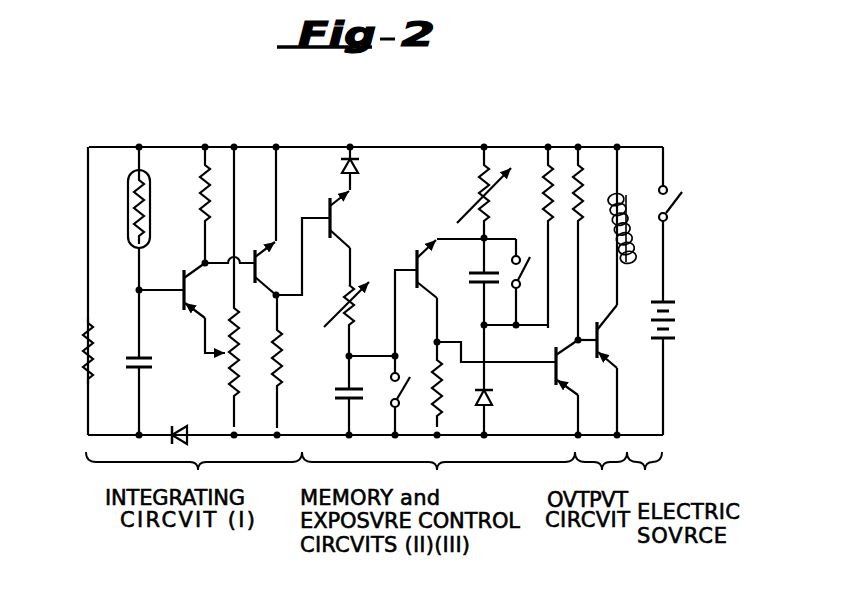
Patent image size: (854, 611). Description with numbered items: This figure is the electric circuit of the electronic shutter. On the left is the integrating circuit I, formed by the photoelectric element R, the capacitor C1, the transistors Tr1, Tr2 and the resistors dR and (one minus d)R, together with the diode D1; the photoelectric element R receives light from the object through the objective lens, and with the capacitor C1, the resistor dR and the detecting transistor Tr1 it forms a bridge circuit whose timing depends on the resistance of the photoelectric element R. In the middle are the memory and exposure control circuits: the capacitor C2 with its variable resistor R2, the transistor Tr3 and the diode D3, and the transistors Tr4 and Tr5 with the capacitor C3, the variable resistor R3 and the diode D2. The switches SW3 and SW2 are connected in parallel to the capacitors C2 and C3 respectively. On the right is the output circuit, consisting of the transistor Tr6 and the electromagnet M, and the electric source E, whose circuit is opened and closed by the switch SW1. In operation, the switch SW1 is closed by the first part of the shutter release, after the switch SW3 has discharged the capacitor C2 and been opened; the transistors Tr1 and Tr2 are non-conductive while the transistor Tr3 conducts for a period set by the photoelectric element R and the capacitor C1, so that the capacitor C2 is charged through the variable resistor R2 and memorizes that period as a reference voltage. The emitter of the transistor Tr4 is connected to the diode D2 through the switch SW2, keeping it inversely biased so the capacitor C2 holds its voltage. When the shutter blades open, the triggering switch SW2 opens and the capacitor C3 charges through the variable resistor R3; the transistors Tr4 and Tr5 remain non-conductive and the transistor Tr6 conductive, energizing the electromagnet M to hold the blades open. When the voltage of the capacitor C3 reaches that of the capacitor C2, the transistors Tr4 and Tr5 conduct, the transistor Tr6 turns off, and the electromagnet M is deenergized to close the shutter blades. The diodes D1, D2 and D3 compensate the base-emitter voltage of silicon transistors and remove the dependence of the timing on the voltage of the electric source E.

The integrating circuit I is at (122, 229).
The photoelectric element R is at (148, 218).
The capacitor C1 is at (151, 362).
The diode D1 is at (180, 422).
The detecting transistor Tr1 is at (182, 308).
The resistor dR is at (246, 360).
The transistor Tr2 is at (272, 221).
The diode D3 is at (363, 168).
The transistor Tr3 is at (347, 238).
The variable resistor R2 is at (341, 319).
The capacitor C2 is at (336, 395).
The switch SW3 is at (391, 395).
The transistor Tr4 is at (479, 323).
The variable resistor R3 is at (480, 194).
The capacitor C3 is at (471, 281).
The triggering switch SW2 is at (538, 282).
The diode D2 is at (498, 380).
The transistor Tr5 is at (574, 387).
The transistor Tr6 is at (615, 370).
The electromagnet M is at (611, 226).
The switch SW1 is at (686, 224).
The electric source E is at (671, 368).